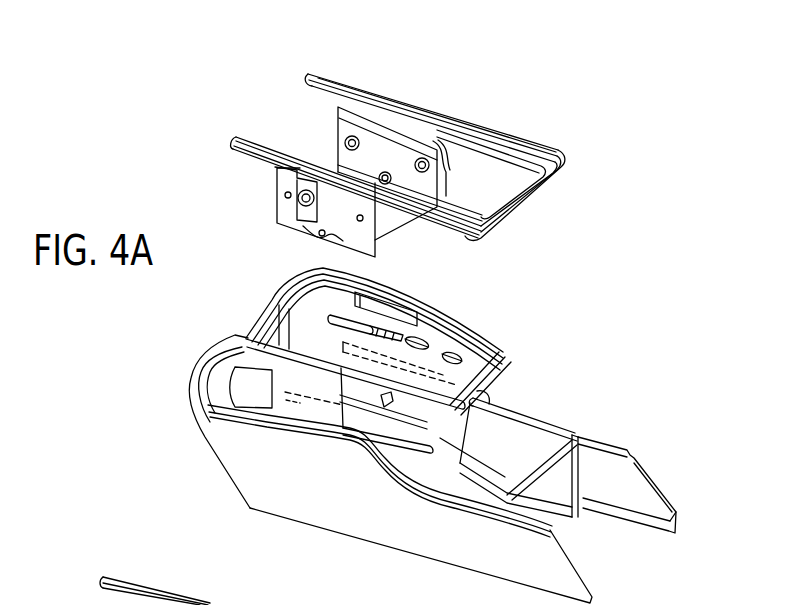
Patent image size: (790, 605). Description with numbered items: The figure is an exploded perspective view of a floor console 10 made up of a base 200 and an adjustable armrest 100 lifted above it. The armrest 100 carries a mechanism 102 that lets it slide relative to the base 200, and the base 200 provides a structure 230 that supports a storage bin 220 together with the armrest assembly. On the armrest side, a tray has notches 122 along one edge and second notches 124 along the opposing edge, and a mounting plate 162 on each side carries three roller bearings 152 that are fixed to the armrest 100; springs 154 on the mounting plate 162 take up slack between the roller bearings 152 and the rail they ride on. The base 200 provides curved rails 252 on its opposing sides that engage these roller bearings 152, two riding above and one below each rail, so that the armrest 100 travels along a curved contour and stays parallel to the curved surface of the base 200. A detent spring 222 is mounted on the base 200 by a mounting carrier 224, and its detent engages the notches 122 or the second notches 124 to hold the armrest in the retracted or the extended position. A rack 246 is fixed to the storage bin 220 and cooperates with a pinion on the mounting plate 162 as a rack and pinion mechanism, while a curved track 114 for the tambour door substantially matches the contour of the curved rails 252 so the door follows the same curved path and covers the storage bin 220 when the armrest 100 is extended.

The floor console 10 is at (596, 333).
The adjustable armrest 100 is at (570, 147).
The mechanism 102 is at (486, 106).
The curved track 114 is at (402, 300).
The notches 122 is at (428, 140).
The notches 124 is at (378, 117).
The roller bearings 152 is at (338, 128).
The springs 154 is at (305, 237).
The mounting plates 162 is at (277, 197).
The base 200 is at (614, 578).
The storage bin 220 is at (275, 332).
The detent spring 222 is at (433, 345).
The mounting carrier 224 is at (390, 400).
The structure 230 is at (666, 496).
The rack 246 is at (483, 394).
The curved rails 252 is at (462, 447).